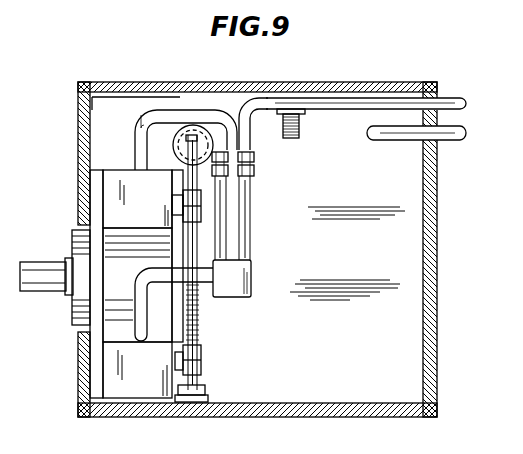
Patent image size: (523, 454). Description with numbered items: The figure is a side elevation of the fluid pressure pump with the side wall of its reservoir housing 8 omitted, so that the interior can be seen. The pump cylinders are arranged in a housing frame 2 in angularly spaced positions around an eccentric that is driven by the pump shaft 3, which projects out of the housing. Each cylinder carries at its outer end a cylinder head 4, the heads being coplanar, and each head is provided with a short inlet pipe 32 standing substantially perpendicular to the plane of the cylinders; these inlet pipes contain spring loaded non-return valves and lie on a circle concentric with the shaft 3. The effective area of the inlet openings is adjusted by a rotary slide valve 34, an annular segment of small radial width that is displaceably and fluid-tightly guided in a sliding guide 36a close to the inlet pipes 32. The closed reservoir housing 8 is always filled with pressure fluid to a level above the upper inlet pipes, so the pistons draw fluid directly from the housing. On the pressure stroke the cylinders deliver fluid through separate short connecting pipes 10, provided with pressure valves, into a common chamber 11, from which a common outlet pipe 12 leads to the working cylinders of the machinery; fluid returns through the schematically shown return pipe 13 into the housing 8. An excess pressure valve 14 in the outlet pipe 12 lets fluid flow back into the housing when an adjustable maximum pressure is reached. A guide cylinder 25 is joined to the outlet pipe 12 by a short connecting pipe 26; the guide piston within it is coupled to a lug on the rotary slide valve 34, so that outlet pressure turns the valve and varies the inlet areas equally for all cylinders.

The housing frame 2 is at (110, 265).
The pump shaft 3 is at (34, 286).
The cylinder head 4 is at (110, 193).
The reservoir housing 8 is at (432, 243).
The connecting pipes 10 is at (150, 112).
The chamber 11 is at (251, 272).
The outlet pipe 12 is at (347, 109).
The return pipe 13 is at (395, 141).
The excess pressure valve 14 is at (297, 139).
The guide cylinder 25 is at (206, 147).
The connecting pipe 26 is at (219, 100).
The inlet pipes 32 is at (181, 382).
The rotary slide valve 34 is at (198, 310).
The sliding guide 36a is at (203, 208).